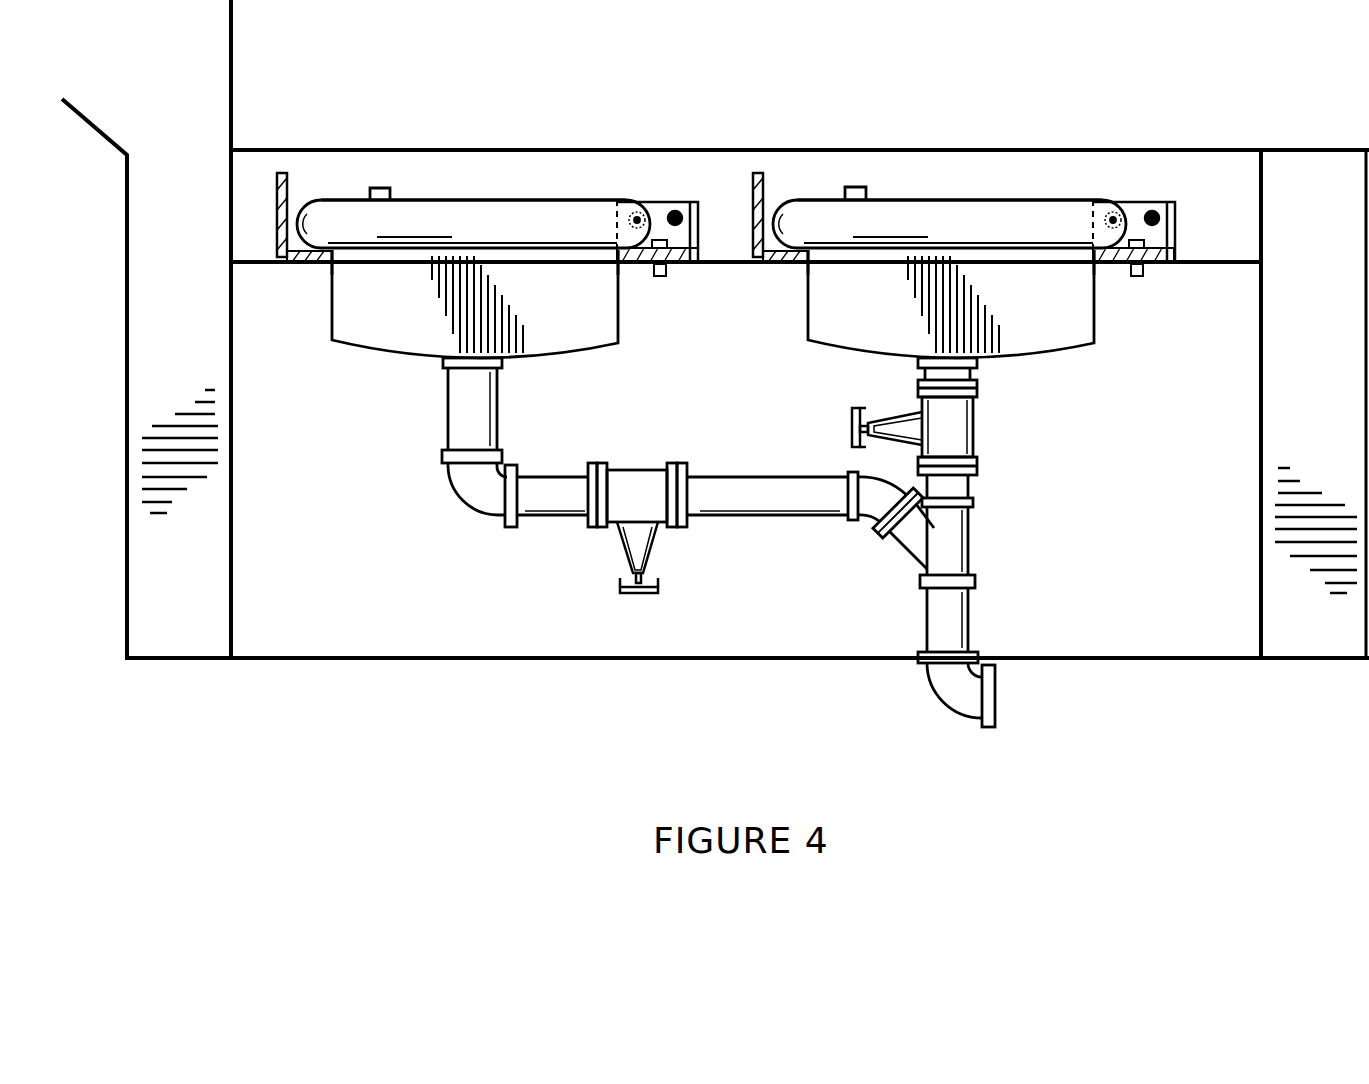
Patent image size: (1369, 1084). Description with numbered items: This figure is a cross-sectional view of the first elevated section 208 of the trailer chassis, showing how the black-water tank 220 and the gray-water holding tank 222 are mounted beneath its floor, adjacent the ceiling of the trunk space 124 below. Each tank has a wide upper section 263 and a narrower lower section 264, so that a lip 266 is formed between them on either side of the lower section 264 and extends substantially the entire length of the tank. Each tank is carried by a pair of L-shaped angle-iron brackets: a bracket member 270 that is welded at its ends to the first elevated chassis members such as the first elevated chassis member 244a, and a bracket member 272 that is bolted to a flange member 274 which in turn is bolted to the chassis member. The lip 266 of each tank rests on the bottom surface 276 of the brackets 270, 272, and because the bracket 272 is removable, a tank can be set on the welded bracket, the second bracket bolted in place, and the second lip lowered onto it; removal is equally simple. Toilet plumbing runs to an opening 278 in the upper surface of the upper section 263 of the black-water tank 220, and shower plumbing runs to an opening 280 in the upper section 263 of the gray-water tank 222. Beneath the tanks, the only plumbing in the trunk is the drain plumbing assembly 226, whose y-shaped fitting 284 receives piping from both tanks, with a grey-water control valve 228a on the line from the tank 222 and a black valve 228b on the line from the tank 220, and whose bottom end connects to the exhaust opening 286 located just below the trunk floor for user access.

The trunk space 124 is at (1113, 592).
The first elevated section 208 is at (940, 148).
The black-water tank 220 is at (1028, 197).
The gray-water holding tank 222 is at (457, 197).
The drain plumbing assembly 226 is at (851, 566).
The grey-water control valve 228a is at (851, 423).
The black valve 228b is at (633, 593).
The first elevated chassis member 244a is at (540, 148).
The upper section 263 is at (525, 233).
The lower section 264 is at (411, 310).
The lip 266 is at (325, 263).
The bracket member 270 is at (283, 173).
The bracket member 272 is at (700, 210).
The flange member 274 is at (672, 253).
The bottom surface 276 is at (275, 256).
The opening 278 is at (854, 186).
The opening 280 is at (382, 186).
The y-shaped fitting 284 is at (953, 545).
The exhaust opening 286 is at (995, 702).